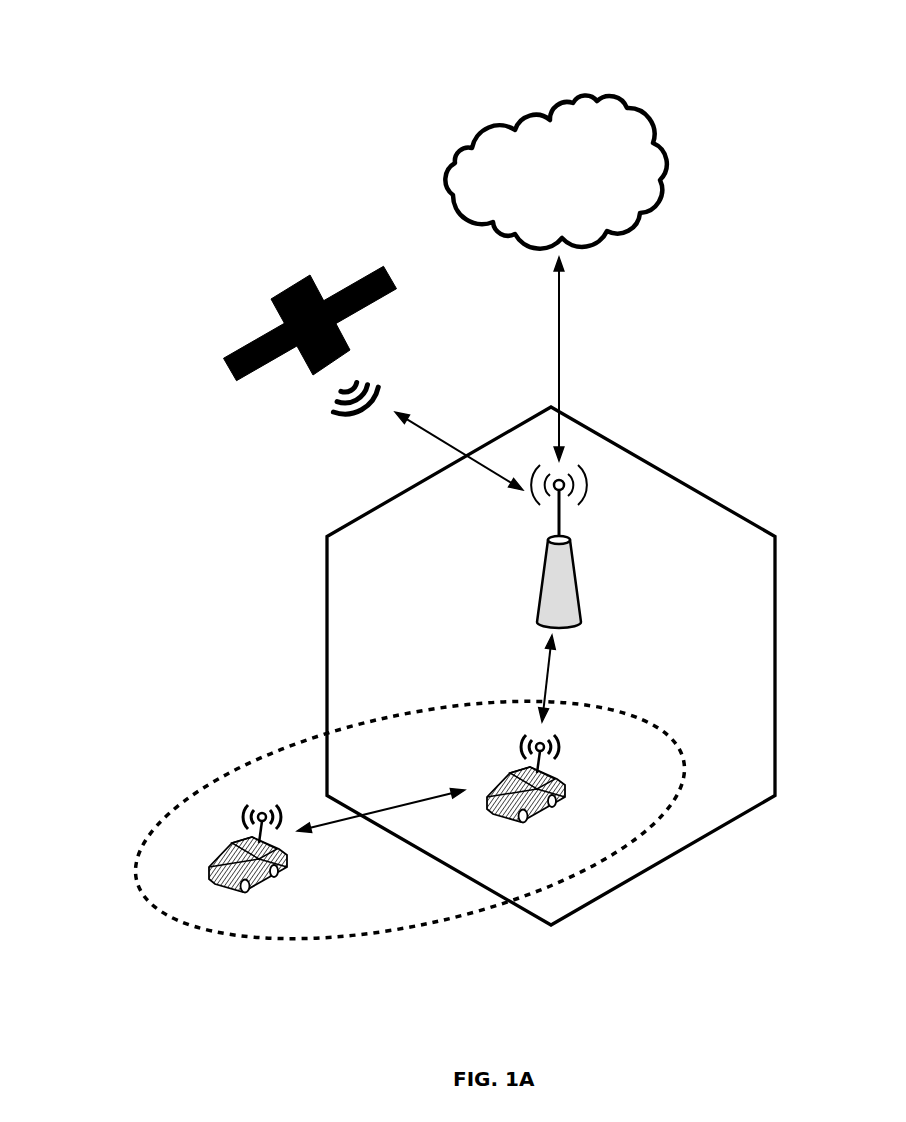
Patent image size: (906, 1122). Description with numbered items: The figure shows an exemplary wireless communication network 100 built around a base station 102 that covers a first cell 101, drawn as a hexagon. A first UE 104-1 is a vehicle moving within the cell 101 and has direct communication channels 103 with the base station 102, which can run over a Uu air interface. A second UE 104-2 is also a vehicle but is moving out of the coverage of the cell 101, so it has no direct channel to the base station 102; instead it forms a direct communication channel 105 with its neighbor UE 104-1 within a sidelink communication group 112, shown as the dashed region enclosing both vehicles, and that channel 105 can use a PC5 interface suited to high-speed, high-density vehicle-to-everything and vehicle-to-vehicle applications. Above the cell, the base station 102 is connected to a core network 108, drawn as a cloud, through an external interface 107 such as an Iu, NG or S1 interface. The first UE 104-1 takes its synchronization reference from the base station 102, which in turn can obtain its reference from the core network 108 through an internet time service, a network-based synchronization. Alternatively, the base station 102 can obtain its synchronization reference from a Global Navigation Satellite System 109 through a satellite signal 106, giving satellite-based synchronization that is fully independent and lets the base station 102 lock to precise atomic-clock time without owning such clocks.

The wireless communication network 100 is at (96, 93).
The first cell 101 is at (740, 815).
The base station 102 is at (583, 573).
The direct communication channels 103 is at (540, 673).
The first UE 104-1 is at (628, 757).
The second UE 104-2 is at (293, 848).
The direct communication channel 105 is at (400, 806).
The satellite signal 106 is at (432, 433).
The external interface 107 is at (555, 283).
The core network 108 is at (487, 153).
The Global Navigation Satellite System 109 is at (288, 287).
The sidelink communication group 112 is at (438, 915).